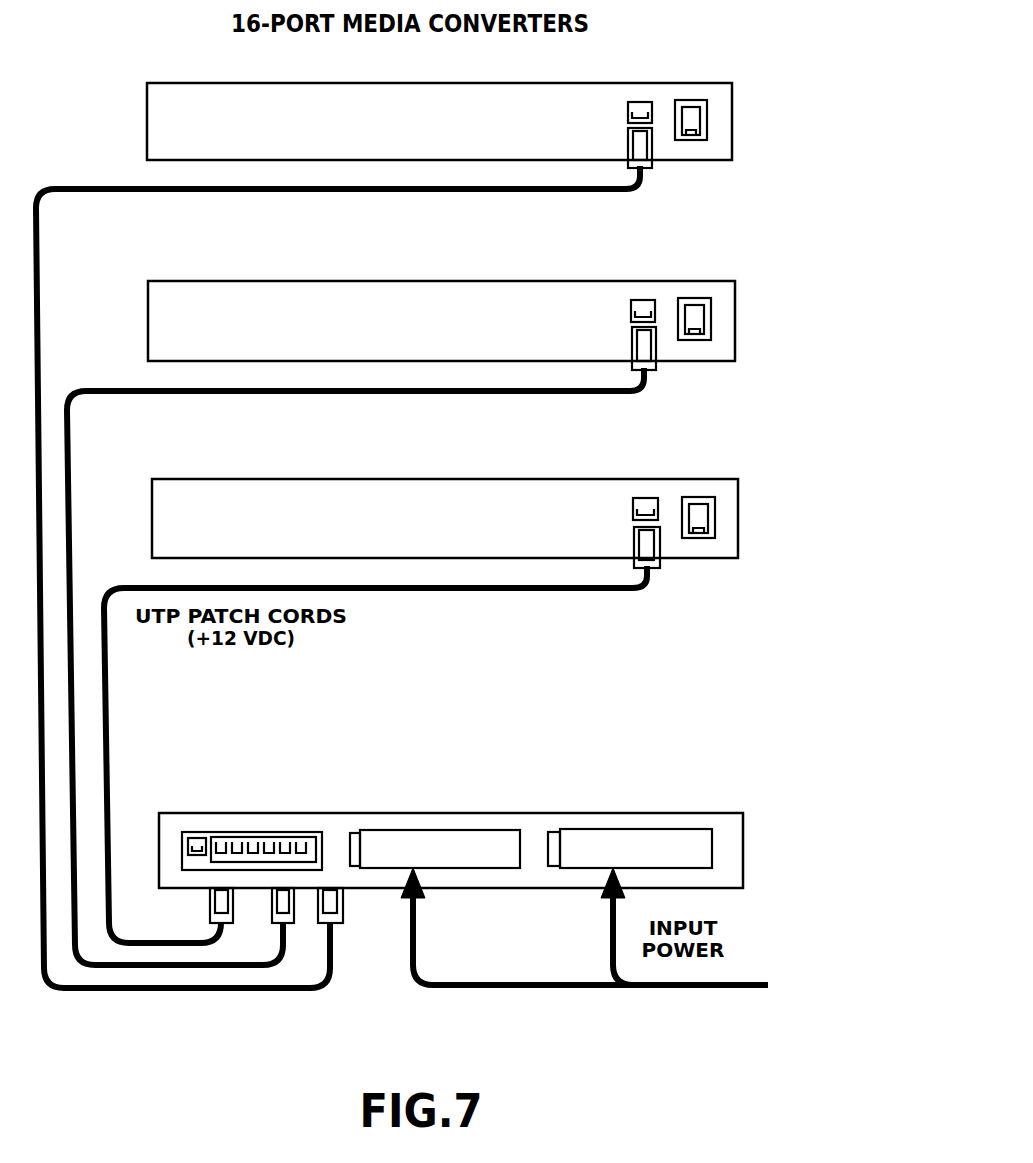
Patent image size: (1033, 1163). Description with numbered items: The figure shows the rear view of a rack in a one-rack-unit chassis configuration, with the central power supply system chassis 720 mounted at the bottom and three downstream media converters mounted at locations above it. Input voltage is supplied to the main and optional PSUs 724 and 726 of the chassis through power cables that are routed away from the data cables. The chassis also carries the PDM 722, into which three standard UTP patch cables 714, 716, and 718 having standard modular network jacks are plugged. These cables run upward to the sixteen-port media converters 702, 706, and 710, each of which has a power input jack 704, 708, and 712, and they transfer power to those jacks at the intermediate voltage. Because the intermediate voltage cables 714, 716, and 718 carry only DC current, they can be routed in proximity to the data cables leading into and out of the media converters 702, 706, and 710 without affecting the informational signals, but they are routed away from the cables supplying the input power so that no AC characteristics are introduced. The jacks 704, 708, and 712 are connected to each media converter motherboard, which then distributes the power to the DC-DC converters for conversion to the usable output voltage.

The 16 port media converter 702 is at (172, 83).
The power input jack 704 is at (640, 102).
The 16 port media converter 706 is at (173, 281).
The power input jack 708 is at (643, 300).
The 16 port media converter 710 is at (177, 479).
The power input jack 712 is at (646, 498).
The UTP patch cable 714 is at (39, 315).
The UTP patch cable 716 is at (72, 525).
The UTP patch cable 718 is at (107, 685).
The power supply unit chassis 720 is at (722, 813).
The PDM 722 is at (250, 835).
The main PSU 724 is at (400, 835).
The optional PSU 726 is at (690, 835).